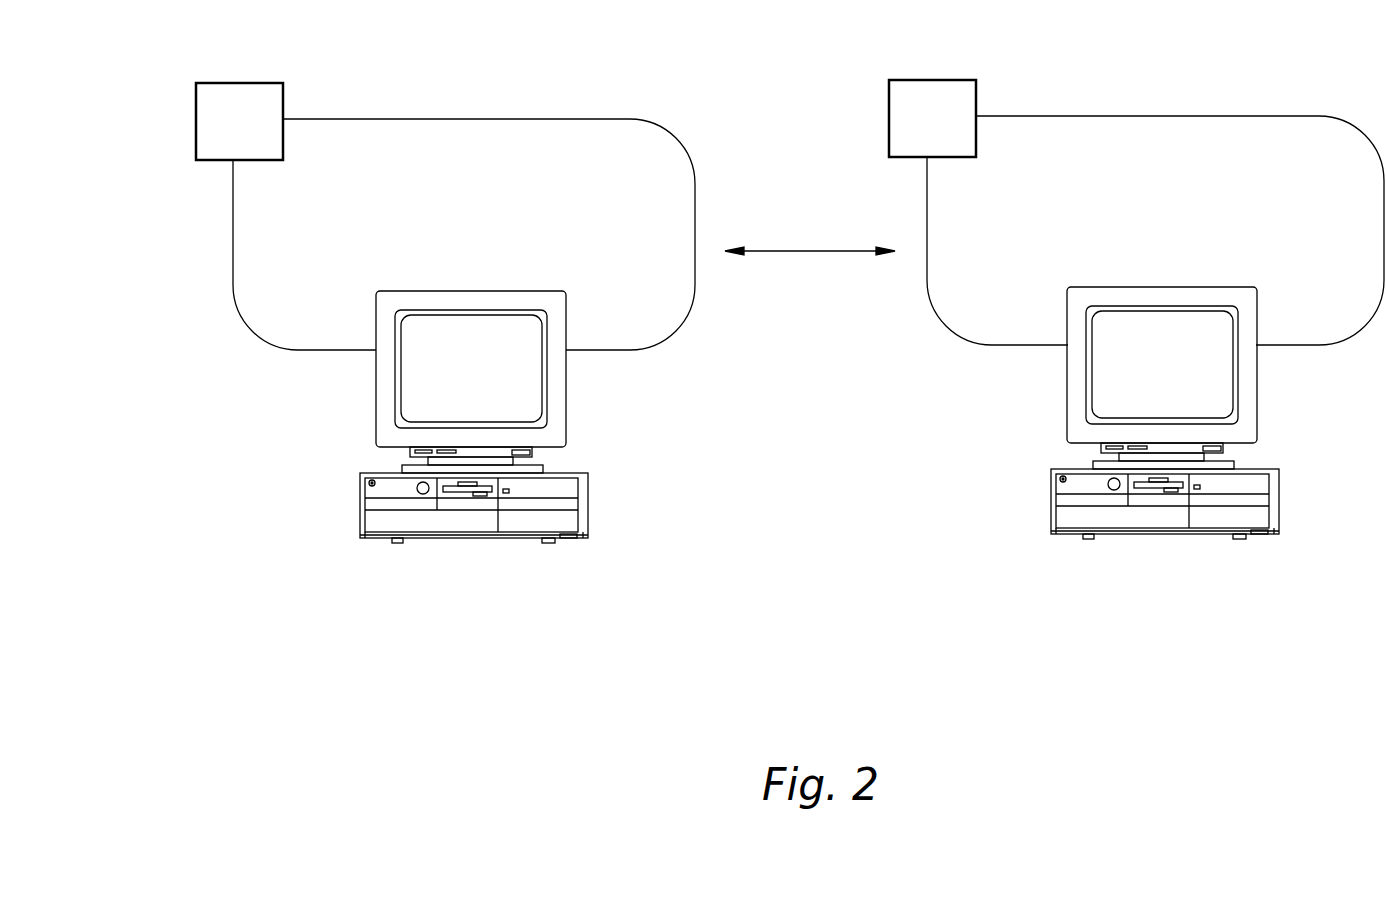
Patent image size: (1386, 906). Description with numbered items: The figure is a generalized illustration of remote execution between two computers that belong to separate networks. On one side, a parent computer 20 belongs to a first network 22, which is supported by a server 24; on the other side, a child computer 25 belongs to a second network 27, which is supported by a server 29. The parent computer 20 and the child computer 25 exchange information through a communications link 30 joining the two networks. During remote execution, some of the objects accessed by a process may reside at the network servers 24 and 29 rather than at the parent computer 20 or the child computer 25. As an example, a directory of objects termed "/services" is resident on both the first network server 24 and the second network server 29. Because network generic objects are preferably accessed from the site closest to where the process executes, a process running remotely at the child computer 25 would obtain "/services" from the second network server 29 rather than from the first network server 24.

The parent computer 20 is at (360, 507).
The first network 22 is at (488, 83).
The server 24 is at (283, 100).
The child computer 25 is at (1277, 500).
The second network 27 is at (1207, 80).
The server 29 is at (976, 97).
The communications link 30 is at (806, 252).